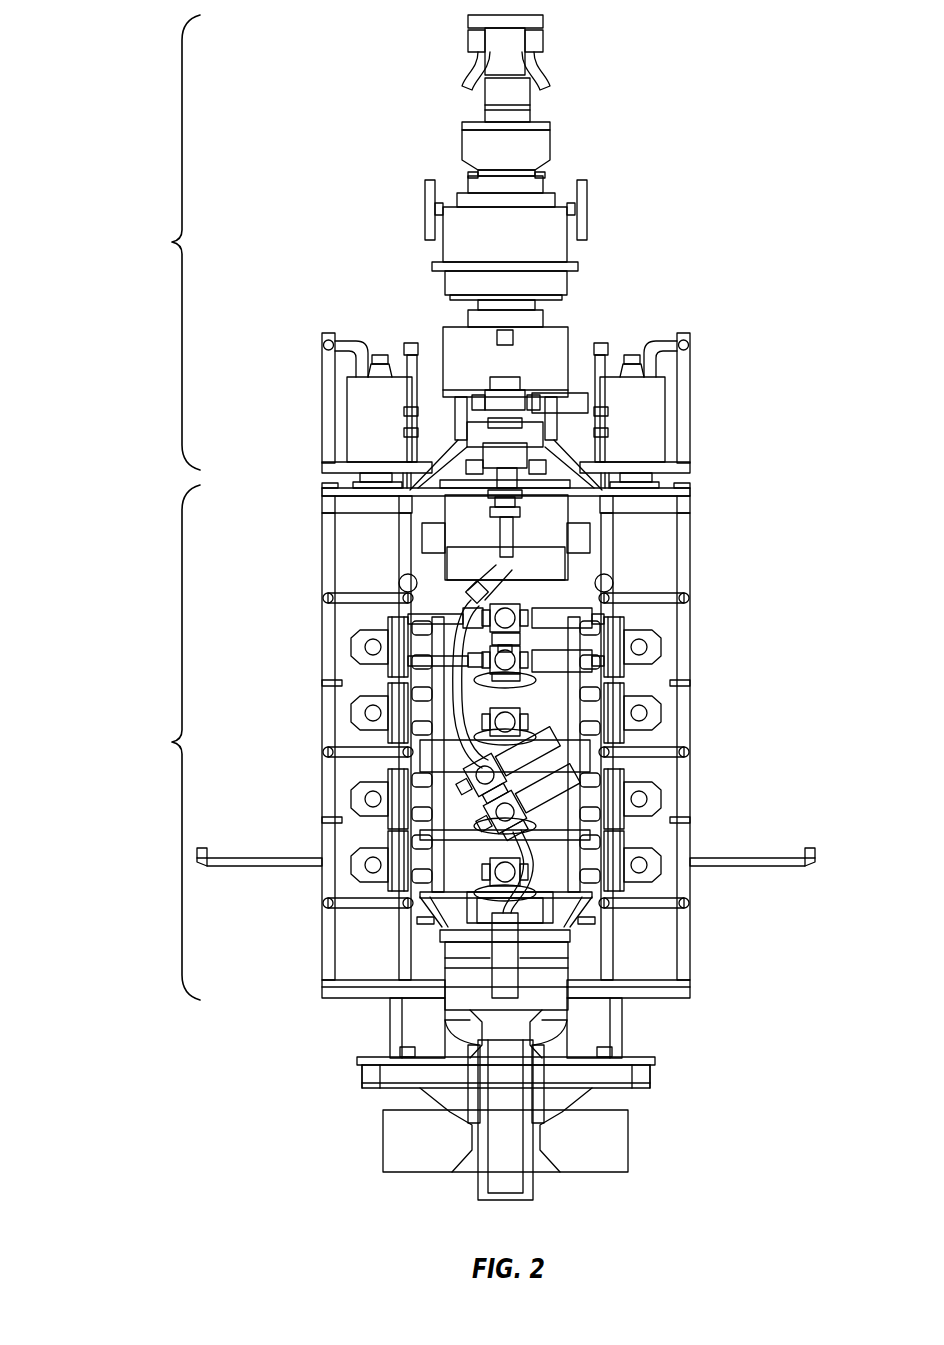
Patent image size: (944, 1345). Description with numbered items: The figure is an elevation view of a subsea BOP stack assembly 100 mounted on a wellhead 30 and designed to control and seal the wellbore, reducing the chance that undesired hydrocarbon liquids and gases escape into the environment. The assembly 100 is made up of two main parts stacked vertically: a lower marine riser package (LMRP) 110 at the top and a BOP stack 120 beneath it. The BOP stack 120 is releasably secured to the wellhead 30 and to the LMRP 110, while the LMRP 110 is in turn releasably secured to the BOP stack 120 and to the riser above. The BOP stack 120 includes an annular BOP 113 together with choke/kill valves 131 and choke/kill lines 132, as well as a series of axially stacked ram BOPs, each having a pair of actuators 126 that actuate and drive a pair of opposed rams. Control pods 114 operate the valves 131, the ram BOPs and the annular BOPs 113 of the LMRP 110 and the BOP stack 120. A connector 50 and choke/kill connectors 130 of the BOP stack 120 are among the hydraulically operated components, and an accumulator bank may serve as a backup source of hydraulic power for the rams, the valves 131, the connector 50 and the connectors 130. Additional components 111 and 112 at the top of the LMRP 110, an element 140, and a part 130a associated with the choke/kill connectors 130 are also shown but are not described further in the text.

The BOP stack assembly 100 is at (122, 492).
The lower marine riser package 110 is at (402, 255).
The BOP stack 120 is at (465, 771).
The adapter 111 is at (545, 153).
The connector 112 is at (517, 96).
The annular BOP 113 is at (545, 75).
The control pods 114 is at (355, 410).
The actuators 126 is at (372, 648).
The choke/kill connectors 130 is at (510, 957).
The conduit fitting 130a is at (493, 453).
The choke/kill valves 131 is at (450, 626).
The choke/kill lines 132 is at (510, 535).
The coupling 140 is at (643, 458).
The connector 50 is at (543, 345).
The wellhead 30 is at (480, 1078).